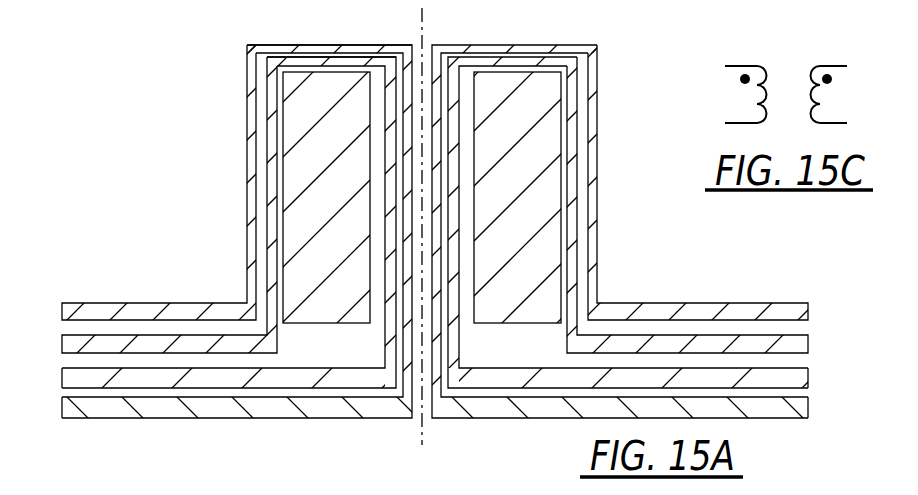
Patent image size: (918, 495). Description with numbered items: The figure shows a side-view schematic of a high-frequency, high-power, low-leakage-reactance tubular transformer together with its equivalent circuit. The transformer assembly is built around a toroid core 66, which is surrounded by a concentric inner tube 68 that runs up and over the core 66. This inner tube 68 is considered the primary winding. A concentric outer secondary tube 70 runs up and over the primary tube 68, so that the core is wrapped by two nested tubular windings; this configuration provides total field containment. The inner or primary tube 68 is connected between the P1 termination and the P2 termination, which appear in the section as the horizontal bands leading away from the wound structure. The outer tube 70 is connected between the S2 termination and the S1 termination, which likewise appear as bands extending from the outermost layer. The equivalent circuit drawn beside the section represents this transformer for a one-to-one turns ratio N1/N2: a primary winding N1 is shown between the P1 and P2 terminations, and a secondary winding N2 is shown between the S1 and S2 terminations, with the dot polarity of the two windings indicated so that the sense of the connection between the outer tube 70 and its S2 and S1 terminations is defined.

In FIG. 15A, the toroid core 66 is at (292, 105).
In FIG. 15A, the inner tube 68 is at (294, 62).
In FIG. 15A, the outer secondary tube 70 is at (258, 45).
In FIG. 15A, the S1 termination S1 is at (459, 247).
In FIG. 15C, the S1 termination S1 is at (852, 63).
In FIG. 15A, the S2 termination S2 is at (459, 247).
In FIG. 15C, the S2 termination S2 is at (852, 128).
In FIG. 15A, the P1 termination P1 is at (459, 247).
In FIG. 15C, the P1 termination P1 is at (722, 64).
In FIG. 15A, the P2 termination P2 is at (459, 247).
In FIG. 15C, the P2 termination P2 is at (722, 128).
In FIG. 15C, the primary turns N1 is at (735, 94).
In FIG. 15C, the secondary turns N2 is at (838, 94).